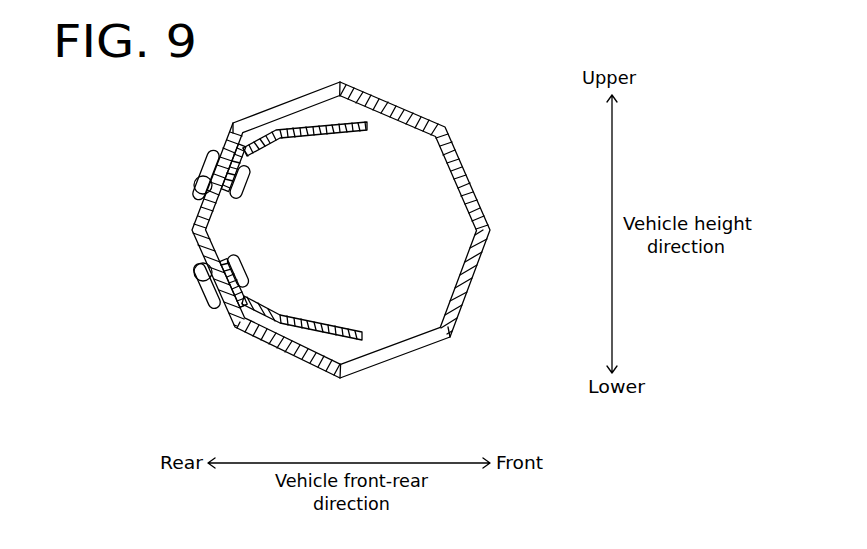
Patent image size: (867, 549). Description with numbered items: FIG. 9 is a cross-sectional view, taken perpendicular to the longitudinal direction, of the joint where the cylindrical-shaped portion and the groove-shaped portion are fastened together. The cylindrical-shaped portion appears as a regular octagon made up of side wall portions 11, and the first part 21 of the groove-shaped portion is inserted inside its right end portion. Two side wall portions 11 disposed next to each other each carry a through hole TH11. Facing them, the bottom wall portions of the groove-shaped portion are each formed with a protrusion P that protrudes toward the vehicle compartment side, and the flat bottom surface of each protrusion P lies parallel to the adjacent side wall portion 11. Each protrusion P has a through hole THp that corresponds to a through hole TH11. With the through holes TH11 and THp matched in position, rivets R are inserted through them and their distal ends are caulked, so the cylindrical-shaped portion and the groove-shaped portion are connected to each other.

The side wall portion 11 is at (226, 143).
The first part 21 is at (342, 228).
The rivet R is at (205, 168).
The protrusion P is at (248, 158).
The through hole TH11 is at (200, 184).
The through hole THp is at (250, 190).